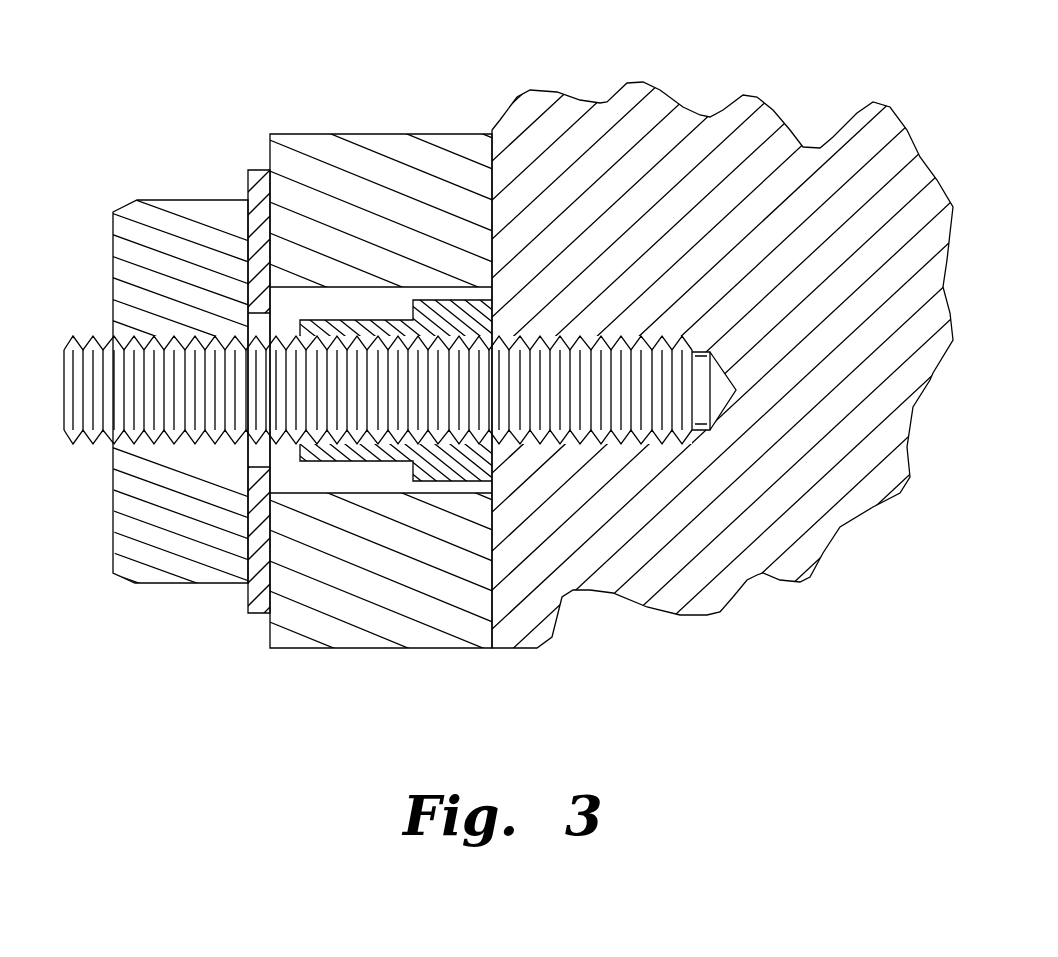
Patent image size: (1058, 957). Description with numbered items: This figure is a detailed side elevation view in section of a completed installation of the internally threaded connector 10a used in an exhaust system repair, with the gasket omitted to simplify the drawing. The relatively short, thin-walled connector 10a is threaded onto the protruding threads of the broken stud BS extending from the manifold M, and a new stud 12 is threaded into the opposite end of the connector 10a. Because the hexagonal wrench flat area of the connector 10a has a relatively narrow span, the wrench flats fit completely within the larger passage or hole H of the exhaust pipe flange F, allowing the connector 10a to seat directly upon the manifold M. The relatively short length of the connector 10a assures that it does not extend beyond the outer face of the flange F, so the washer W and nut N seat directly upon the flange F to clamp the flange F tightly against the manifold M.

The new stud 12 is at (80, 340).
The internally threaded connector 10a is at (355, 322).
The broken stud BS is at (533, 335).
The nut N is at (125, 583).
The washer W is at (253, 613).
The exhaust system flange F is at (355, 650).
The stud passage or hole H is at (392, 473).
The manifold M is at (707, 617).